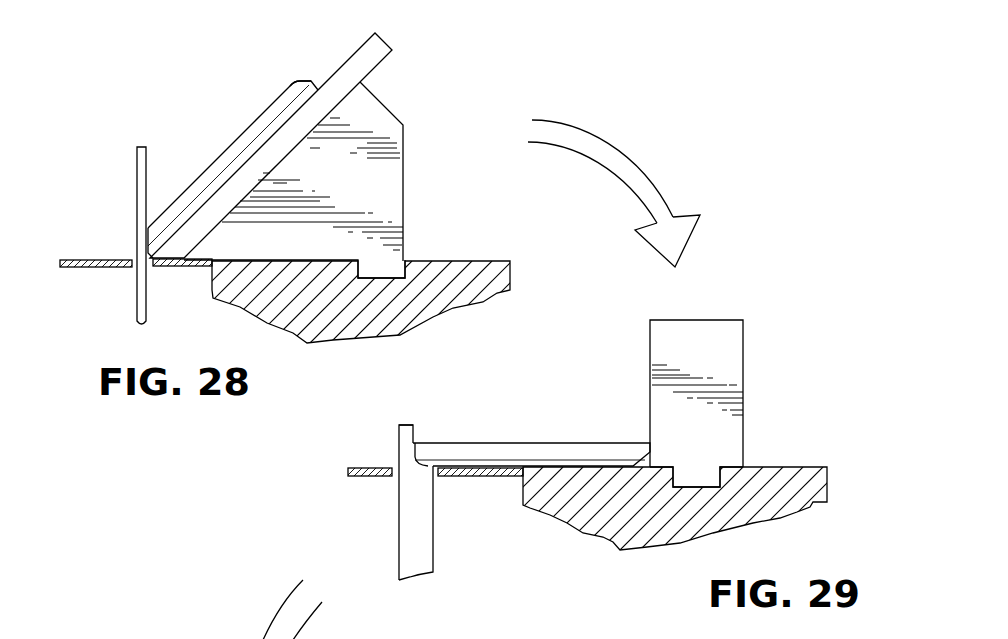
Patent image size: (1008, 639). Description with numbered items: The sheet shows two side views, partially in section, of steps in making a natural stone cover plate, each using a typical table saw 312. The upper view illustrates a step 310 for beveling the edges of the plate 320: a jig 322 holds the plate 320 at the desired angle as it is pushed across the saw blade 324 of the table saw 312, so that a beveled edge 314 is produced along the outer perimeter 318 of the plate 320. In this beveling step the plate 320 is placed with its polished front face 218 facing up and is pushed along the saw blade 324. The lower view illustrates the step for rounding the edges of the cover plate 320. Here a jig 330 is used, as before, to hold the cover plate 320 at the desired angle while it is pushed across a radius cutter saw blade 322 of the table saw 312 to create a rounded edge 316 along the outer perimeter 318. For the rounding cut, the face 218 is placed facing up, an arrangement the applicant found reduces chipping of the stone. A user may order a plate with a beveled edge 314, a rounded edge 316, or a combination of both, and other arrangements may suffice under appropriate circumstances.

In FIG. 28, the front face 218 is at (270, 132).
In FIG. 29, the front face 218 is at (481, 472).
In FIG. 28, the step 310 is at (126, 290).
In FIG. 28, the table saw 312 is at (497, 251).
In FIG. 29, the table saw 312 is at (784, 466).
In FIG. 28, the beveled edge 314 is at (307, 81).
In FIG. 29, the rounded edge 316 is at (399, 457).
In FIG. 28, the outer perimeter 318 is at (314, 86).
In FIG. 29, the outer perimeter 318 is at (415, 443).
In FIG. 28, the plate 320 is at (264, 132).
In FIG. 29, the plate 320 is at (531, 431).
In FIG. 28, the jig 322 is at (393, 99).
In FIG. 29, the jig 322 is at (372, 502).
In FIG. 28, the saw blade 324 is at (137, 160).
In FIG. 29, the jig 330 is at (757, 311).